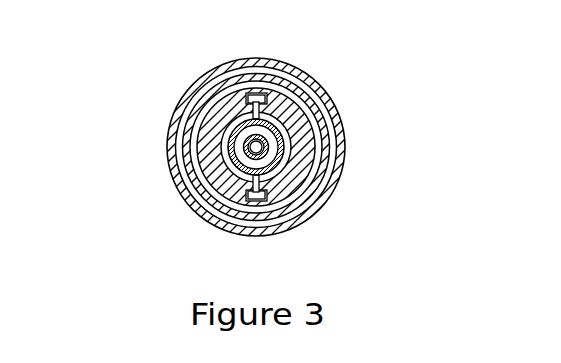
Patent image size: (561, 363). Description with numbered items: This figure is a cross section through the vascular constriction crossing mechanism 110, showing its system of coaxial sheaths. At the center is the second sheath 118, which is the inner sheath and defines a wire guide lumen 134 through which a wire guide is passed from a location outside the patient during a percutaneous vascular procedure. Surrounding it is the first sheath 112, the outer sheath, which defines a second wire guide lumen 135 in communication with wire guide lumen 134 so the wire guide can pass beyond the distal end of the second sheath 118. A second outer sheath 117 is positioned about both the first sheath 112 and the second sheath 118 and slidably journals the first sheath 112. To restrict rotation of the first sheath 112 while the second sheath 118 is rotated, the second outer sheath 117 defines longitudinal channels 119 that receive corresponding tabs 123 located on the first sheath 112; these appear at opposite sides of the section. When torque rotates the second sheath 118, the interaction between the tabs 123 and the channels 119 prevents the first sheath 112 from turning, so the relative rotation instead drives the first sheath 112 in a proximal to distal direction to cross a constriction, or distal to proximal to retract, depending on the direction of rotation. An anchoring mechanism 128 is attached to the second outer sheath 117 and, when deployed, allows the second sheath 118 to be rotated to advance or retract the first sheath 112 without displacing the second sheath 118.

The vascular constriction crossing mechanism 110 is at (150, 239).
The first sheath 112 is at (328, 175).
The second outer sheath 117 is at (318, 107).
The second sheath 118 is at (245, 147).
The longitudinal channels 119 is at (262, 96).
The tabs 123 is at (232, 103).
The anchoring mechanism 128 is at (343, 124).
The wire guide lumen 134 is at (240, 135).
The second wire guide lumen 135 is at (235, 163).